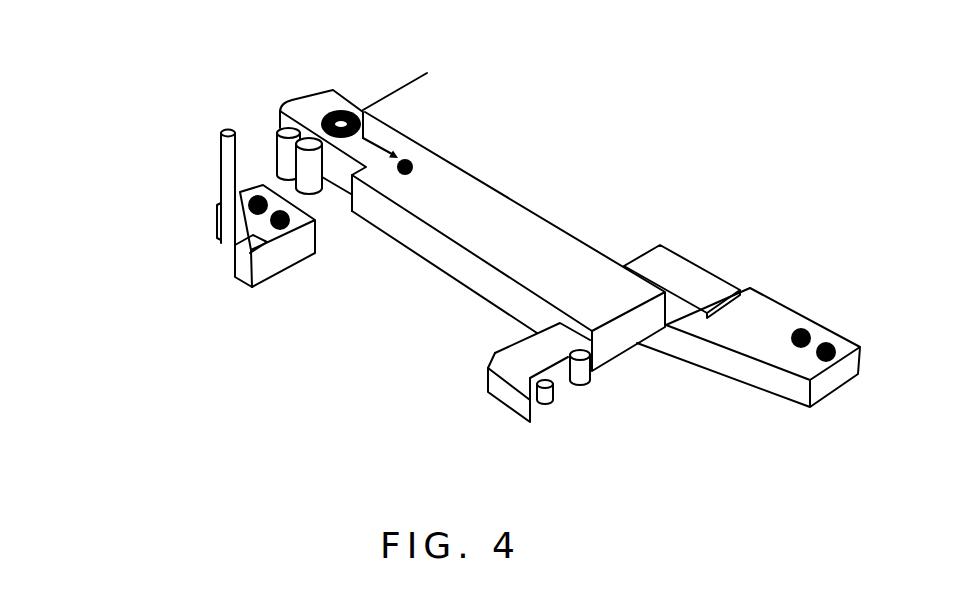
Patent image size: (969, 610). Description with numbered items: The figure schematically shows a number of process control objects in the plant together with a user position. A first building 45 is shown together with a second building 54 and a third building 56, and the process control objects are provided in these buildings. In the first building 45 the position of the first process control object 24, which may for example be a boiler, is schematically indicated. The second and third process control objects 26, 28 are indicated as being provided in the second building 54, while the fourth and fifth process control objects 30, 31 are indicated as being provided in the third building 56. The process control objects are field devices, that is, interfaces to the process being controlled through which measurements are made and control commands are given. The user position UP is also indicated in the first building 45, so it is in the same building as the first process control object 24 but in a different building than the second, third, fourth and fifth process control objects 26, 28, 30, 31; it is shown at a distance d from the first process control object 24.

The first process control object 24 is at (422, 152).
The first building 45 is at (537, 220).
The third building 56 is at (710, 272).
The fourth process control object 30 is at (797, 347).
The fifth process control object 31 is at (797, 347).
The second building 54 is at (243, 265).
The second process control object 26 is at (250, 202).
The third process control object 28 is at (250, 202).